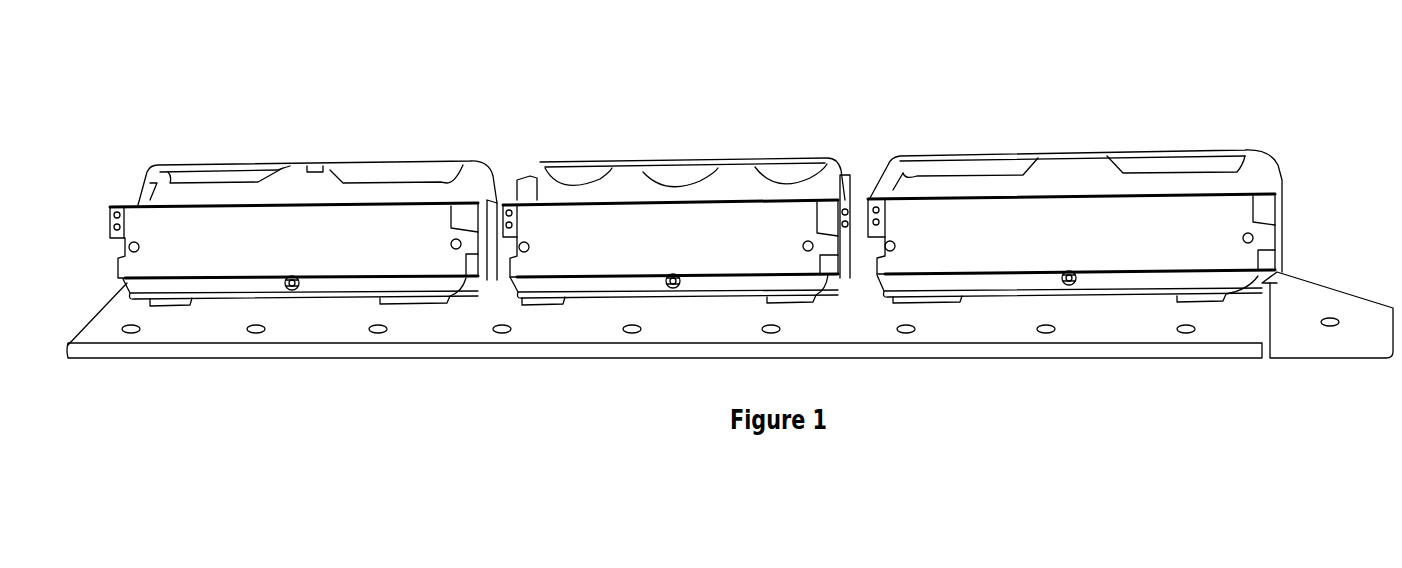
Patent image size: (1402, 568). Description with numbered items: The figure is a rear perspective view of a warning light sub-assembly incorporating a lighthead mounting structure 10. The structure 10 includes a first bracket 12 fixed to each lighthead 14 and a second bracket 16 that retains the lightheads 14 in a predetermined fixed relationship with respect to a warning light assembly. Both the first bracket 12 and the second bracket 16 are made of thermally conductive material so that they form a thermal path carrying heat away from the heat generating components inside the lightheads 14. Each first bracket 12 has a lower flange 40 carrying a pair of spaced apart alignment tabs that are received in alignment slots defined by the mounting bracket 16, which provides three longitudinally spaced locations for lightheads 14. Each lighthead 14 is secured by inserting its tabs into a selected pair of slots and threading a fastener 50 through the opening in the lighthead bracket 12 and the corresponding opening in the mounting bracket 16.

The lighthead mounting structure 10 is at (380, 248).
The first bracket 12 is at (262, 226).
The lighthead 14 is at (312, 197).
The second bracket 16 is at (185, 332).
The lower flange 40 is at (200, 287).
The fastener 50 is at (293, 290).